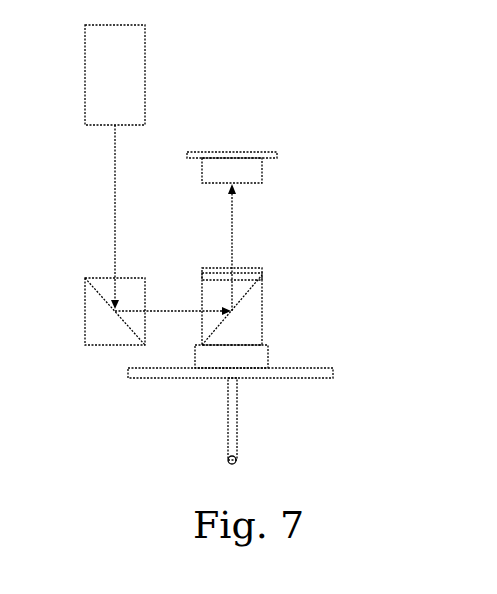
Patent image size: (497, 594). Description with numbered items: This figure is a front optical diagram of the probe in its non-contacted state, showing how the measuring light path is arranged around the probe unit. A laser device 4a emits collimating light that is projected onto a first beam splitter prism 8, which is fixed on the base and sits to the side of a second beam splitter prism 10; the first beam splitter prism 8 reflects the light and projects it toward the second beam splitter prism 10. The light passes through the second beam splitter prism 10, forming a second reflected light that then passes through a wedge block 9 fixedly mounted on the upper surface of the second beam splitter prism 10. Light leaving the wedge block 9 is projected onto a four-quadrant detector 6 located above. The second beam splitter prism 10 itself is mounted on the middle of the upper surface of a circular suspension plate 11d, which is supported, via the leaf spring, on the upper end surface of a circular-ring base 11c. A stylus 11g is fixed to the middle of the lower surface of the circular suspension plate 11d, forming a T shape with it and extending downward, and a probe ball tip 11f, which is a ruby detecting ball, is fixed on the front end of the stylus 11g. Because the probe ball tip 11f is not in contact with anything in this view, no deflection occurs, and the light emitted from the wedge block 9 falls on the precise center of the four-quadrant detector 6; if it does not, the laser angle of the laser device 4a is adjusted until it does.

The laser device 4a is at (125, 58).
The four-quadrant detector 6 is at (253, 166).
The first beam splitter prism 8 is at (85, 311).
The wedge block 9 is at (255, 272).
The second beam splitter prism 10 is at (245, 316).
The circular suspension plate 11d is at (258, 355).
The circular-ring base 11c is at (335, 372).
The stylus 11g is at (237, 410).
The probe ball tip 11f is at (236, 460).